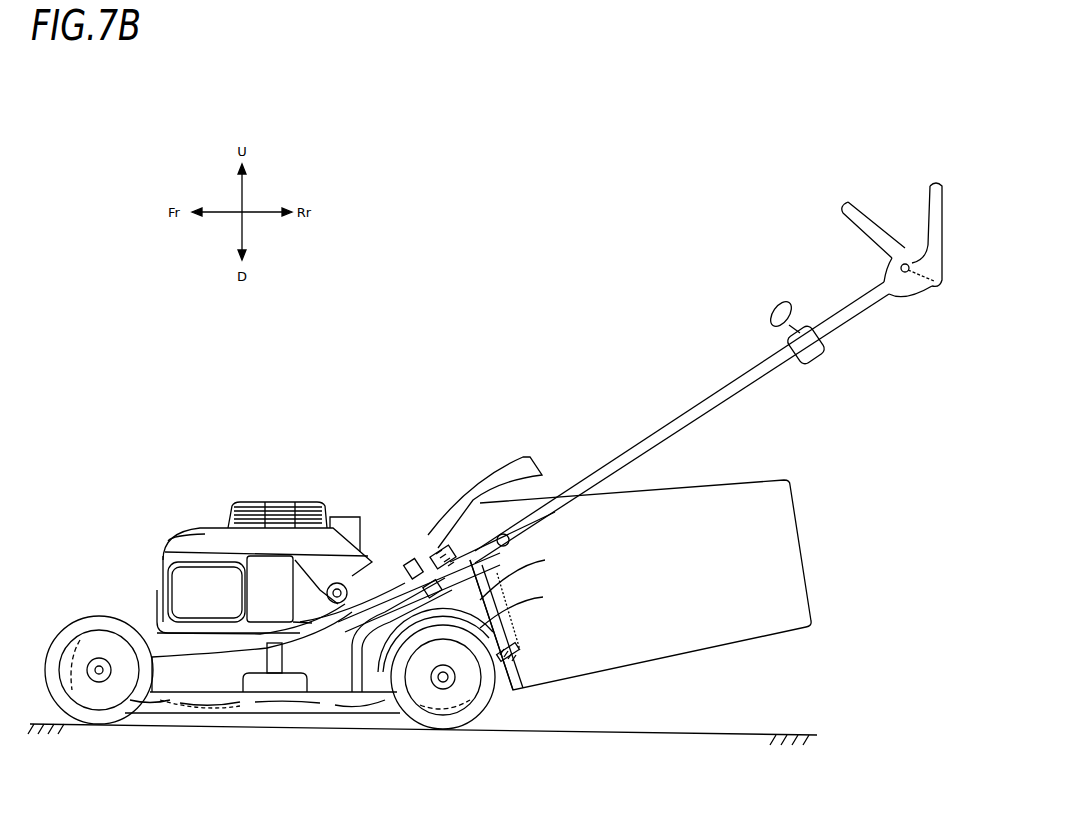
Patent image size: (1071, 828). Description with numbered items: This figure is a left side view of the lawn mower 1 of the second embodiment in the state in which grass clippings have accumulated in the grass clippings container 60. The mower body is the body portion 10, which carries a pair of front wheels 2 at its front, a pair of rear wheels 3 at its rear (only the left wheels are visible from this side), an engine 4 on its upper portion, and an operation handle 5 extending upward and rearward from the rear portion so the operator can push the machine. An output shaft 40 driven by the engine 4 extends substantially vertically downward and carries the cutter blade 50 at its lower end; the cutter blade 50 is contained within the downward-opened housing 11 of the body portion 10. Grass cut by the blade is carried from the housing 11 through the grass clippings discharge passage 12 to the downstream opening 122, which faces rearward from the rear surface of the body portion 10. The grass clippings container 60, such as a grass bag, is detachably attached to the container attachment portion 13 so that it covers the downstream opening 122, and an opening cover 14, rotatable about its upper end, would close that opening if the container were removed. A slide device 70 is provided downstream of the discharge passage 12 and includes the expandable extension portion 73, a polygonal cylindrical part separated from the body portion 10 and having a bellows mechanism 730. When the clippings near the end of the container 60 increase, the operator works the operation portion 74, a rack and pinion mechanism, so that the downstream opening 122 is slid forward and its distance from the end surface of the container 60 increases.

The lawn mower 1 is at (528, 288).
The front wheels 2 is at (98, 722).
The rear wheels 3 is at (473, 717).
The engine 4 is at (214, 542).
The operation handle 5 is at (707, 396).
The body portion 10 is at (160, 647).
The housing 11 is at (323, 708).
The grass clippings discharge passage 12 is at (450, 572).
The container attachment portion 13 is at (457, 635).
The opening cover 14 is at (500, 463).
The output shaft 40 is at (262, 692).
The cutter blade 50 is at (180, 702).
The grass clippings container 60 is at (777, 520).
The slide device 70 is at (520, 548).
The extension portion 73 is at (507, 632).
The operation portion 74 is at (418, 545).
The downstream opening 122 is at (500, 597).
The bellows mechanism 730 is at (520, 660).